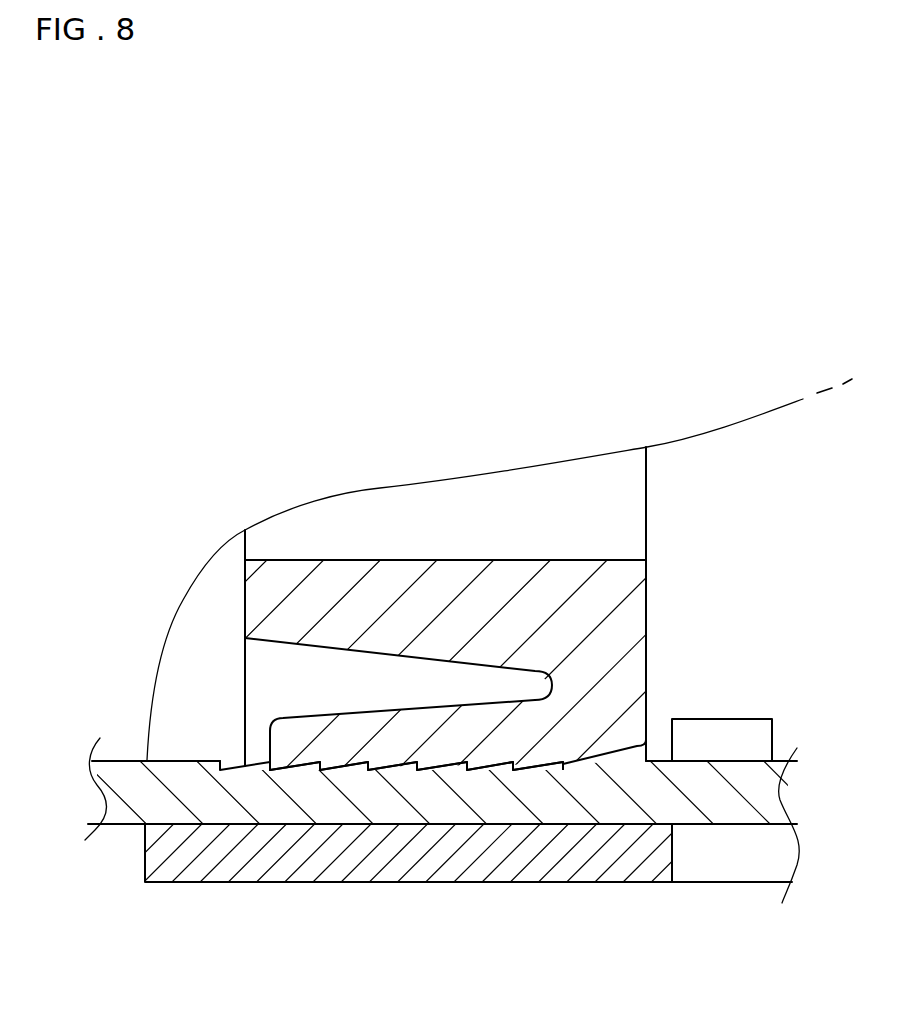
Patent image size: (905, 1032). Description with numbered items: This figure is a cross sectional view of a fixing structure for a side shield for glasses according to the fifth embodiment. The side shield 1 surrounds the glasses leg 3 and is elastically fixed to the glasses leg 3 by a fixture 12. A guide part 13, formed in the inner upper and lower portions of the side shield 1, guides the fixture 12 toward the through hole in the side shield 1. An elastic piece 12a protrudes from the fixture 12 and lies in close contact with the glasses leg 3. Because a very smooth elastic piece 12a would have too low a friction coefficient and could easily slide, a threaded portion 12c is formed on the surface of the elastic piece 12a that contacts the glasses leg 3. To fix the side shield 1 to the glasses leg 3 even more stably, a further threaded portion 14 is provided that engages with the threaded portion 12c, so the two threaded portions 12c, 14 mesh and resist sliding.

The side shield 1 is at (203, 870).
The glasses leg 3 is at (728, 812).
The fixture 12 is at (456, 556).
The elastic piece 12a is at (338, 745).
The threaded portion 12c is at (440, 766).
The guide part 13 is at (647, 503).
The threaded portion 14 is at (475, 765).